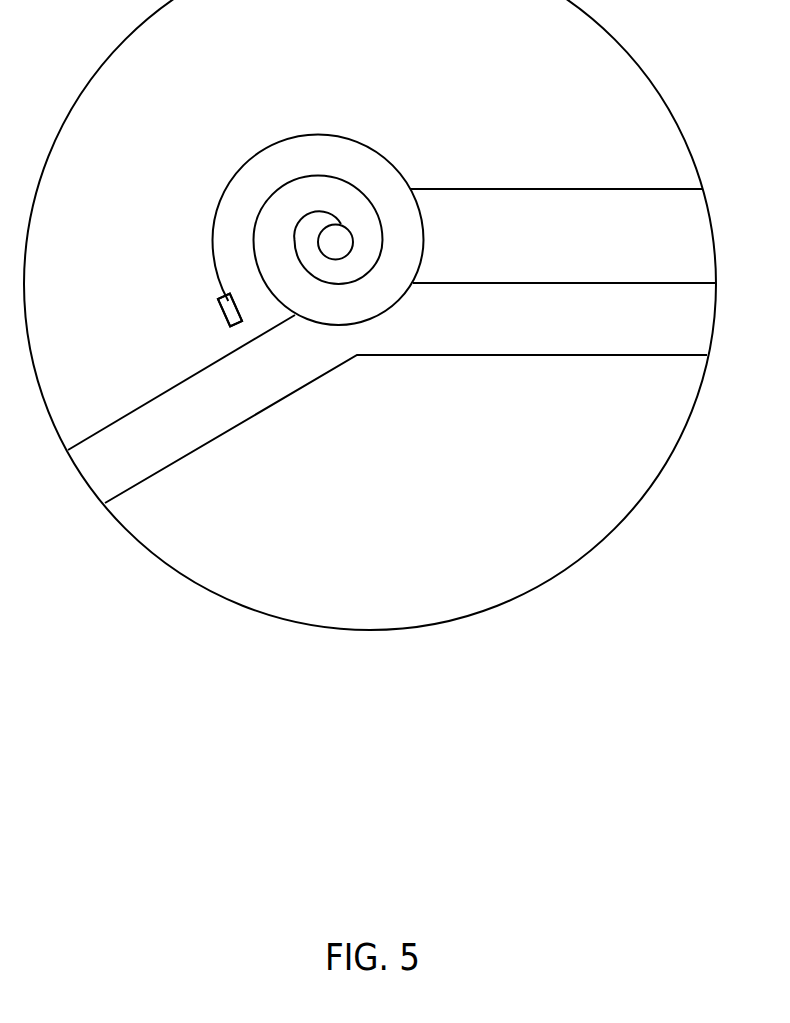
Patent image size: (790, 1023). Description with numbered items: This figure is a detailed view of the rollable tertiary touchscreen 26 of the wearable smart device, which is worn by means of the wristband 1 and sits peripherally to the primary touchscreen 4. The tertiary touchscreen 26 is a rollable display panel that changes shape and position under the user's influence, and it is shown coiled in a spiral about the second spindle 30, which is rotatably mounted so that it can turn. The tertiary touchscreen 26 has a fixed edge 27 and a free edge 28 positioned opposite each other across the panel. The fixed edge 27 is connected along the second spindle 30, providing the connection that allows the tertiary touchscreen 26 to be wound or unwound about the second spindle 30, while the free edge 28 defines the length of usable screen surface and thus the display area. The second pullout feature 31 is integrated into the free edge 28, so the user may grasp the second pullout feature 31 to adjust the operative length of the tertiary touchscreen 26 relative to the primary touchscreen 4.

The wristband 1 is at (448, 343).
The primary touchscreen 4 is at (561, 252).
The tertiary touchscreen 26 is at (277, 145).
The fixed edge 27 is at (346, 220).
The free edge 28 is at (212, 296).
The second spindle 30 is at (348, 252).
The second pullout feature 31 is at (226, 313).